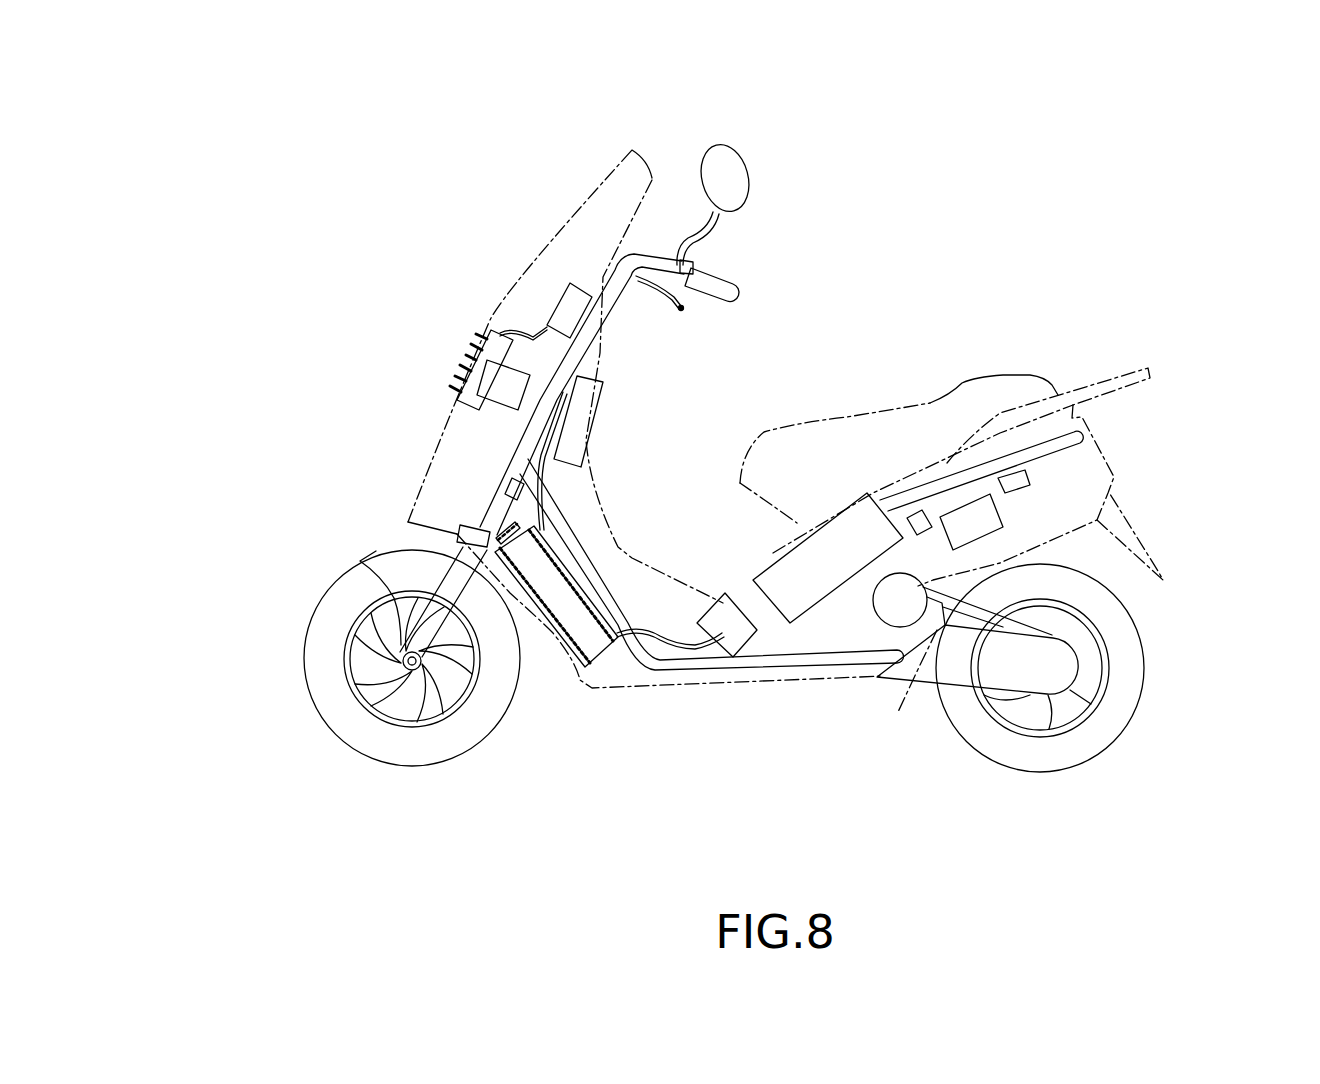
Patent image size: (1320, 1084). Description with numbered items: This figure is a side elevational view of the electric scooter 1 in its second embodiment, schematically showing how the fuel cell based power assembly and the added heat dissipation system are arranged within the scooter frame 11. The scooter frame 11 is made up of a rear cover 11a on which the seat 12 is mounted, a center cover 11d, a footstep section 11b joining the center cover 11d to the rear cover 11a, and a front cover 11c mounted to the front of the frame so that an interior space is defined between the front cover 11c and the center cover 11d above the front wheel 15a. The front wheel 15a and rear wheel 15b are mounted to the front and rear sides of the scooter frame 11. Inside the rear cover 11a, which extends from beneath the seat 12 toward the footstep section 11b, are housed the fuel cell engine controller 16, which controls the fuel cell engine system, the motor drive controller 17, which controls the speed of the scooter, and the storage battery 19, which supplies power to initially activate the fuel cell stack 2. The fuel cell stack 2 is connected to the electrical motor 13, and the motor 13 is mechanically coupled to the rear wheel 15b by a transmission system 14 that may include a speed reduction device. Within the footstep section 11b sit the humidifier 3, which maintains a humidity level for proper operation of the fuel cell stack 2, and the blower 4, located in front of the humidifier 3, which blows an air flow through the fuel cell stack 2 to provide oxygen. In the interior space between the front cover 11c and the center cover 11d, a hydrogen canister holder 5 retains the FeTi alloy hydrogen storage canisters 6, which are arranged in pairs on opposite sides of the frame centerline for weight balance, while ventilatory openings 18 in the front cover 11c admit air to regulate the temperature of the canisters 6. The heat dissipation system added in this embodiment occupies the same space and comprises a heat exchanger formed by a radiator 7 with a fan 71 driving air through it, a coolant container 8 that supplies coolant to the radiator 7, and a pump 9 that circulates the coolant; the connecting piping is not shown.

The electric scooter 1 is at (866, 280).
The fuel cell stack 2 is at (817, 582).
The humidifier 3 is at (735, 636).
The blower 4 is at (677, 615).
The hydrogen canister holder 5 is at (574, 672).
The hydrogen storage canister 6 is at (548, 595).
The radiator 7 is at (500, 348).
The coolant container 8 is at (560, 312).
The pump 9 is at (588, 402).
The scooter frame 11 is at (1138, 454).
The rear cover 11a is at (1097, 431).
The footstep section 11b is at (593, 778).
The front cover 11c is at (440, 430).
The center cover 11d is at (613, 342).
The seat 12 is at (990, 388).
The electrical motor 13 is at (903, 625).
The transmission system 14 is at (1047, 677).
The front wheel 15a is at (340, 712).
The rear wheel 15b is at (1123, 667).
The fuel cell engine controller 16 is at (1000, 512).
The motor drive controller 17 is at (1012, 477).
The ventilatory openings 18 is at (487, 338).
The storage battery 19 is at (910, 515).
The fan 71 is at (507, 395).